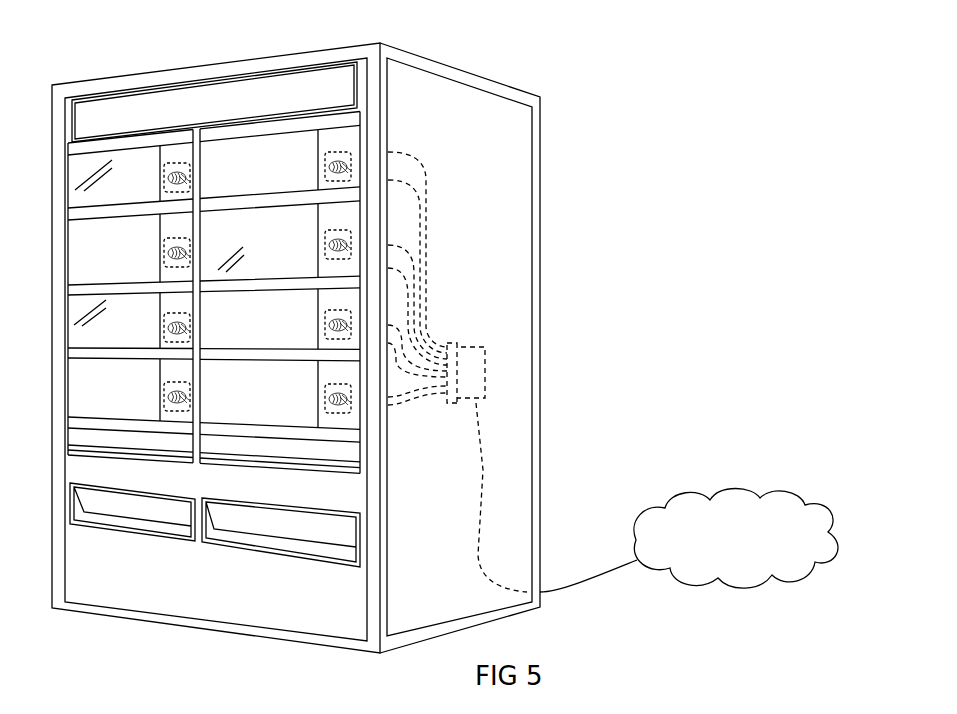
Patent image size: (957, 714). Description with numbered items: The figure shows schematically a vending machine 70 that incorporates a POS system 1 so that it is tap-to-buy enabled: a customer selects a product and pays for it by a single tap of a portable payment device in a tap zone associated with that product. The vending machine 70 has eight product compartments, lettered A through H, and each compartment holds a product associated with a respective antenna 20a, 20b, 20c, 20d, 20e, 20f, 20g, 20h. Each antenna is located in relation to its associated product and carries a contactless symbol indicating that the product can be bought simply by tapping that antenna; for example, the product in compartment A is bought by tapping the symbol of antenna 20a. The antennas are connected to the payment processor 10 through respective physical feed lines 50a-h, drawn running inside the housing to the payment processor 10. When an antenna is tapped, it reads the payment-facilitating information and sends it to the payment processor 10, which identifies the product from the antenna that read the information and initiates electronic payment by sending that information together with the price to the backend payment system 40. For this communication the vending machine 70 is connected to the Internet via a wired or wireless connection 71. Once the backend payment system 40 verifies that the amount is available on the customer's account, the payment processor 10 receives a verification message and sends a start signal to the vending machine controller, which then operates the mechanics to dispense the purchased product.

The POS system 1 is at (326, 329).
The vending machine 70 is at (470, 72).
The payment processor 10 is at (507, 349).
The physical feed lines 50a-h is at (433, 349).
The antenna 20a is at (164, 183).
The antenna 20b is at (325, 171).
The antenna 20c is at (164, 255).
The antenna 20d is at (325, 250).
The antenna 20e is at (164, 331).
The antenna 20f is at (325, 328).
The antenna 20g is at (164, 396).
The antenna 20h is at (325, 400).
The backend payment system 40 is at (700, 556).
The wired or wireless connection 71 is at (600, 576).